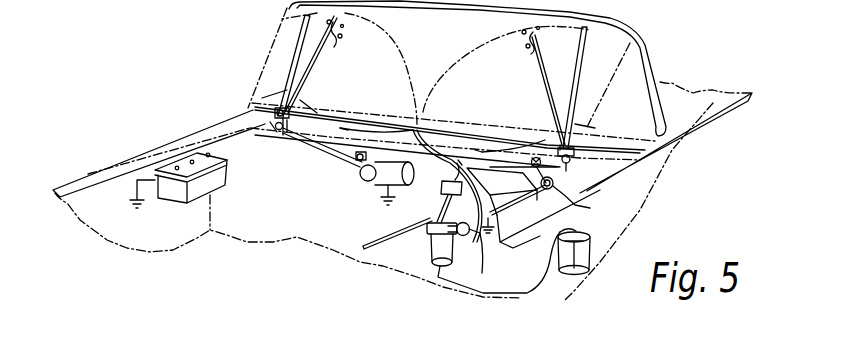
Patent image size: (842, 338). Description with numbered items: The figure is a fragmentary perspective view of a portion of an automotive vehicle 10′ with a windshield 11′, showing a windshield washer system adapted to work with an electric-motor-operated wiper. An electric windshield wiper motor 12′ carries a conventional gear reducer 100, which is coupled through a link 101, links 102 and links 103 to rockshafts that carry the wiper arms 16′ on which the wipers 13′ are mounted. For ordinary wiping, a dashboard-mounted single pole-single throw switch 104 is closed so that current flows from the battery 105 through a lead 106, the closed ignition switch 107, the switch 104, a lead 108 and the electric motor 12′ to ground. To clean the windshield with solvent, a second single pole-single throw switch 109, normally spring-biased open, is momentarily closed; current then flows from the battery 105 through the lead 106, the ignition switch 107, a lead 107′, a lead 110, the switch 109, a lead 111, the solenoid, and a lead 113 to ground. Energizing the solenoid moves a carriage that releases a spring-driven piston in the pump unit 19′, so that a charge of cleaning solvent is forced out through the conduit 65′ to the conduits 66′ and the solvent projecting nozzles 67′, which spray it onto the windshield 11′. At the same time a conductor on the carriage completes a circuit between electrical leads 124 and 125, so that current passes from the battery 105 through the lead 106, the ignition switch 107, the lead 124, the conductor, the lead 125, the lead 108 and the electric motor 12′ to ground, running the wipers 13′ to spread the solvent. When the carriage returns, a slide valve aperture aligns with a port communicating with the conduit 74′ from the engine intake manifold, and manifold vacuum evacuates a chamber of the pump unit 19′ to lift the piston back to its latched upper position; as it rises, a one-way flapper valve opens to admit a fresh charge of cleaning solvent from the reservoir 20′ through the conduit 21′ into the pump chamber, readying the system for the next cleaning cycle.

The automotive vehicle 10′ is at (711, 86).
The windshield 11′ is at (447, 50).
The electric windshield wiper motor 12′ is at (378, 188).
The wipers 13′ is at (298, 30).
The wiper arms 16′ is at (265, 97).
The pump unit 19′ is at (425, 260).
The reservoir 20′ is at (593, 253).
The conduit 21′ is at (513, 297).
The conduit 65′ is at (445, 160).
The conduits 66′ is at (342, 130).
The solvent projecting nozzles 67′ is at (300, 100).
The conduit 74′ is at (378, 248).
The gear reducer 100 is at (366, 172).
The link 101 is at (367, 153).
The links 102 is at (318, 152).
The links 103 is at (273, 125).
The single pole-single throw switch 104 is at (480, 160).
The battery 105 is at (213, 182).
The lead 106 is at (286, 139).
The ignition switch 107 is at (462, 165).
The lead 107′ is at (545, 140).
The lead 108 is at (450, 188).
The single pole-single throw switch 109 is at (547, 190).
The lead 110 is at (540, 188).
The lead 111 is at (518, 209).
The lead 113 is at (473, 243).
The electrical lead 124 is at (425, 220).
The electrical lead 125 is at (440, 220).